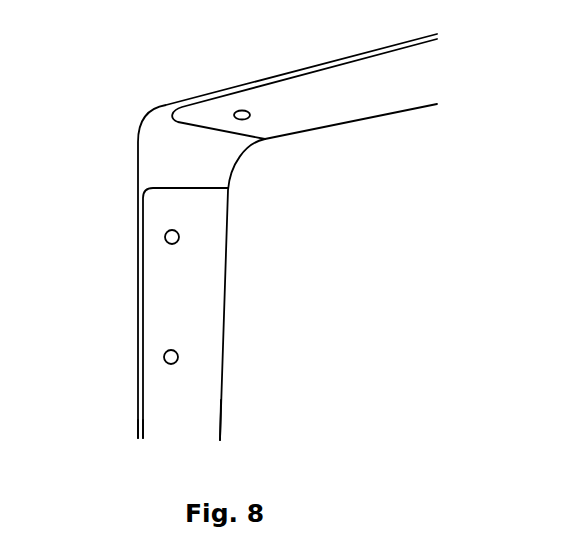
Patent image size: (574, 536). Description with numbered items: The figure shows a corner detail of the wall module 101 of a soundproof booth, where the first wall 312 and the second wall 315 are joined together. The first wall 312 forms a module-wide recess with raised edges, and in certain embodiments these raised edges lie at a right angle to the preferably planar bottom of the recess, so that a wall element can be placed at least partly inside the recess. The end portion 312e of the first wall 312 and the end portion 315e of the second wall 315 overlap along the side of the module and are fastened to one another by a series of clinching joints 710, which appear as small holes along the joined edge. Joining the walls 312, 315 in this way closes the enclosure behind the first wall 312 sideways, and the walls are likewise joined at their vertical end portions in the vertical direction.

The wall module 101 is at (109, 234).
The first wall 312 is at (318, 117).
The end portion of the first wall 312e is at (196, 406).
The second wall 315 is at (138, 177).
The end portion of the second wall 315e is at (116, 414).
The clinching joints 710 is at (226, 131).